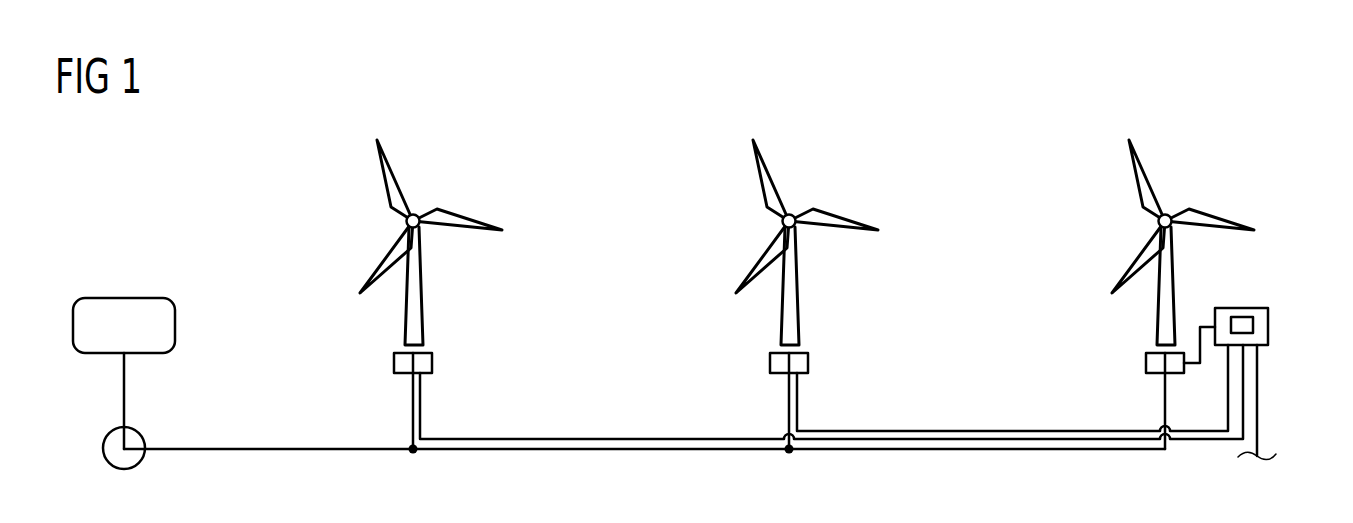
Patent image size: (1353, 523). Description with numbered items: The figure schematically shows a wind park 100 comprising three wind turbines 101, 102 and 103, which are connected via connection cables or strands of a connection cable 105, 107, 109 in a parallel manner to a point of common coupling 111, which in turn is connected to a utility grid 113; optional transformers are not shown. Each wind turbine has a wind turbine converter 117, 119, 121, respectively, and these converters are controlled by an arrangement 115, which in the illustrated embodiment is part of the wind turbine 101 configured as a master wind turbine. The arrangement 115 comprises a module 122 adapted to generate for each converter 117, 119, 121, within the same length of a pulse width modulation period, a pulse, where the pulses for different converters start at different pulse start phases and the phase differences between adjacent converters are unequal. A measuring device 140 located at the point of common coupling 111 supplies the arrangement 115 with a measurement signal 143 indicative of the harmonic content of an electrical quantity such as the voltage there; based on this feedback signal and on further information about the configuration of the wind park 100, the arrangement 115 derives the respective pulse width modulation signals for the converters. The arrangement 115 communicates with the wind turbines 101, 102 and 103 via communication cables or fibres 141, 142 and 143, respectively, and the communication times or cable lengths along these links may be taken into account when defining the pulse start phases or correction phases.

The wind park 100 is at (1100, 128).
The wind turbine 101 is at (1198, 202).
The wind turbine 102 is at (823, 202).
The wind turbine 103 is at (447, 202).
The connection cable 105 is at (933, 452).
The connection cable 107 is at (565, 452).
The connection cable 109 is at (267, 448).
The point of common coupling 111 is at (133, 441).
The utility grid 113 is at (122, 298).
The arrangement for controlling wind turbine converters 115 is at (1269, 325).
The wind turbine converter 117 is at (1145, 363).
The wind turbine converter 119 is at (810, 362).
The wind turbine converter 121 is at (393, 362).
The module 122 is at (1245, 317).
The measuring device 140 is at (107, 433).
The communication cable or fibre 141 is at (1213, 322).
The communication cable or fibre 142 is at (977, 430).
The communication cable or fibre 143 is at (677, 438).